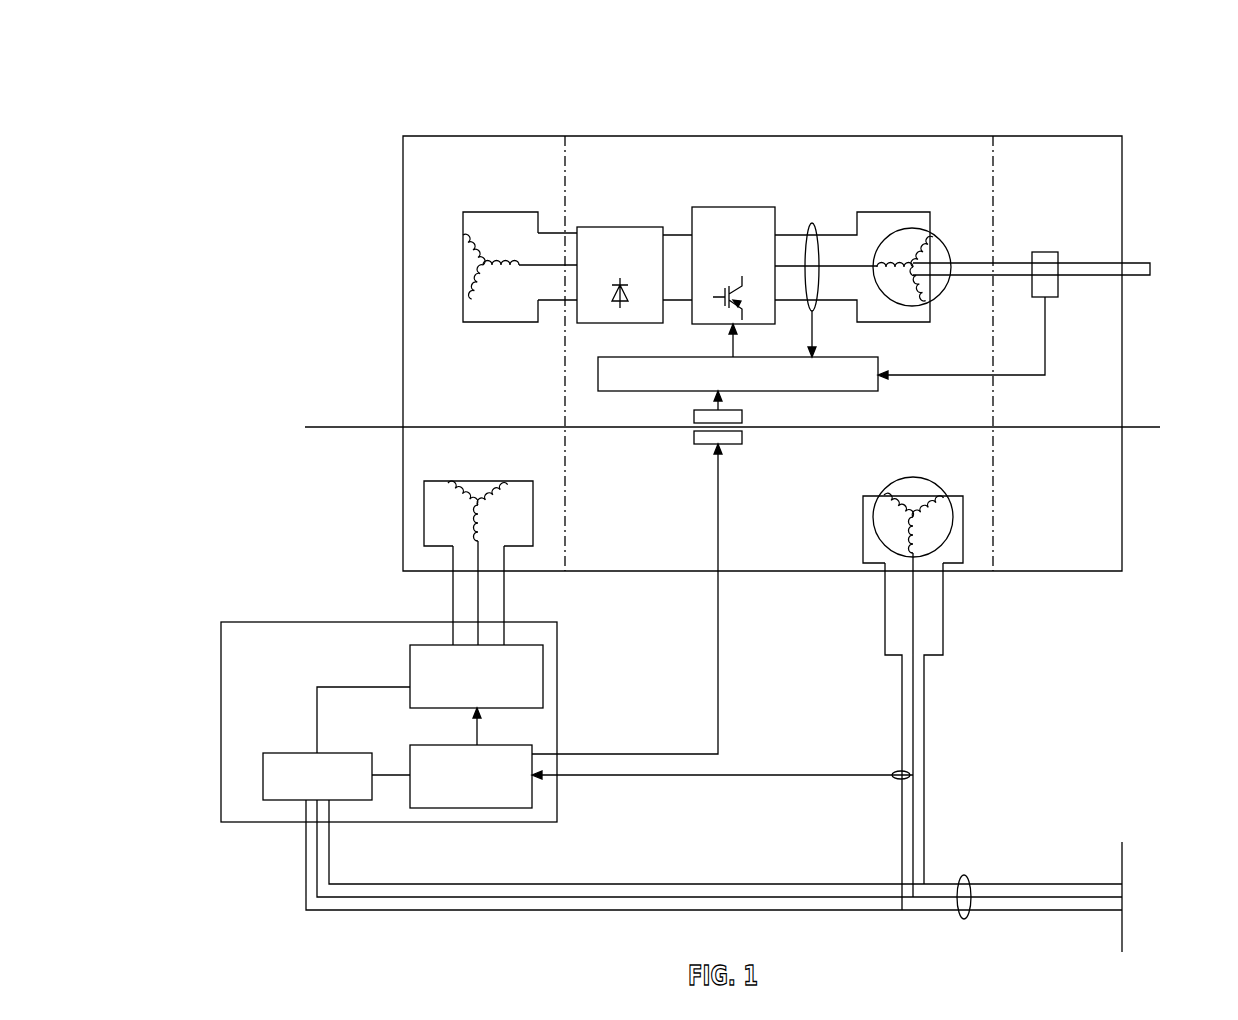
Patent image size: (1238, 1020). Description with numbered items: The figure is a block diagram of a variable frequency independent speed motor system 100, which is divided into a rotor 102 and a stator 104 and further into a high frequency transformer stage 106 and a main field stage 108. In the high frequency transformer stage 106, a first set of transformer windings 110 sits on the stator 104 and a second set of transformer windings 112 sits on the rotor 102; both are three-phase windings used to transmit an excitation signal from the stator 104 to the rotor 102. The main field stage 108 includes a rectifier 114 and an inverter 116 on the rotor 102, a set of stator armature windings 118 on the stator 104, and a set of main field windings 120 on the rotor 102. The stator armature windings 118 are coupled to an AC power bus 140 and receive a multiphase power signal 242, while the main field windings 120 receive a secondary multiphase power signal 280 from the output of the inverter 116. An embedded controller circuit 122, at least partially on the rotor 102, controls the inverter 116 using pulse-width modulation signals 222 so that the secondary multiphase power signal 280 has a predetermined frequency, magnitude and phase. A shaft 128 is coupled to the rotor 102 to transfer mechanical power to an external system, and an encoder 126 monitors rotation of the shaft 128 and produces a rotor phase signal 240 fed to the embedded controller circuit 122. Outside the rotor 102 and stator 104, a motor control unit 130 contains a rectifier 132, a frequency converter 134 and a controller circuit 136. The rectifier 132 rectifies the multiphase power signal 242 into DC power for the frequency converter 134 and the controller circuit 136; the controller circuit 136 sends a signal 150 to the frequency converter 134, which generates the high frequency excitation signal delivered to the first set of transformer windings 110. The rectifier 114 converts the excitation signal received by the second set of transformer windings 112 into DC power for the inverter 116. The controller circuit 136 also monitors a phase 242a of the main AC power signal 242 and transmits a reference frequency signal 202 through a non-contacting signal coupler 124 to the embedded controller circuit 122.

The variable frequency independent speed motor system 100 is at (313, 100).
The rotor 102 is at (403, 179).
The stator 104 is at (403, 465).
The high frequency transformer stage 106 is at (418, 135).
The main field stage 108 is at (910, 135).
The first set of transformer windings 110 is at (505, 483).
The second set of transformer windings 112 is at (472, 299).
The rectifier 114 is at (620, 227).
The inverter 116 is at (735, 207).
The set of stator armature windings 118 is at (886, 507).
The set of main field windings 120 is at (926, 300).
The embedded controller circuit 122 is at (641, 392).
The signal coupler 124 is at (743, 442).
The encoder 126 is at (1048, 297).
The shaft 128 is at (1137, 263).
The motor control unit 130 is at (268, 622).
The rectifier 132 is at (263, 770).
The frequency converter 134 is at (410, 655).
The controller circuit 136 is at (410, 755).
The AC power bus 140 is at (1125, 868).
The signal 150 is at (481, 737).
The reference frequency signal 202 is at (720, 657).
The pulse-width modulation signals 222 is at (730, 353).
The rotor phase signal 240 is at (1023, 375).
The multiphase power signal 242 is at (960, 918).
The phase of the main AC power signal 242a is at (722, 778).
The secondary multiphase power signal 280 is at (812, 224).